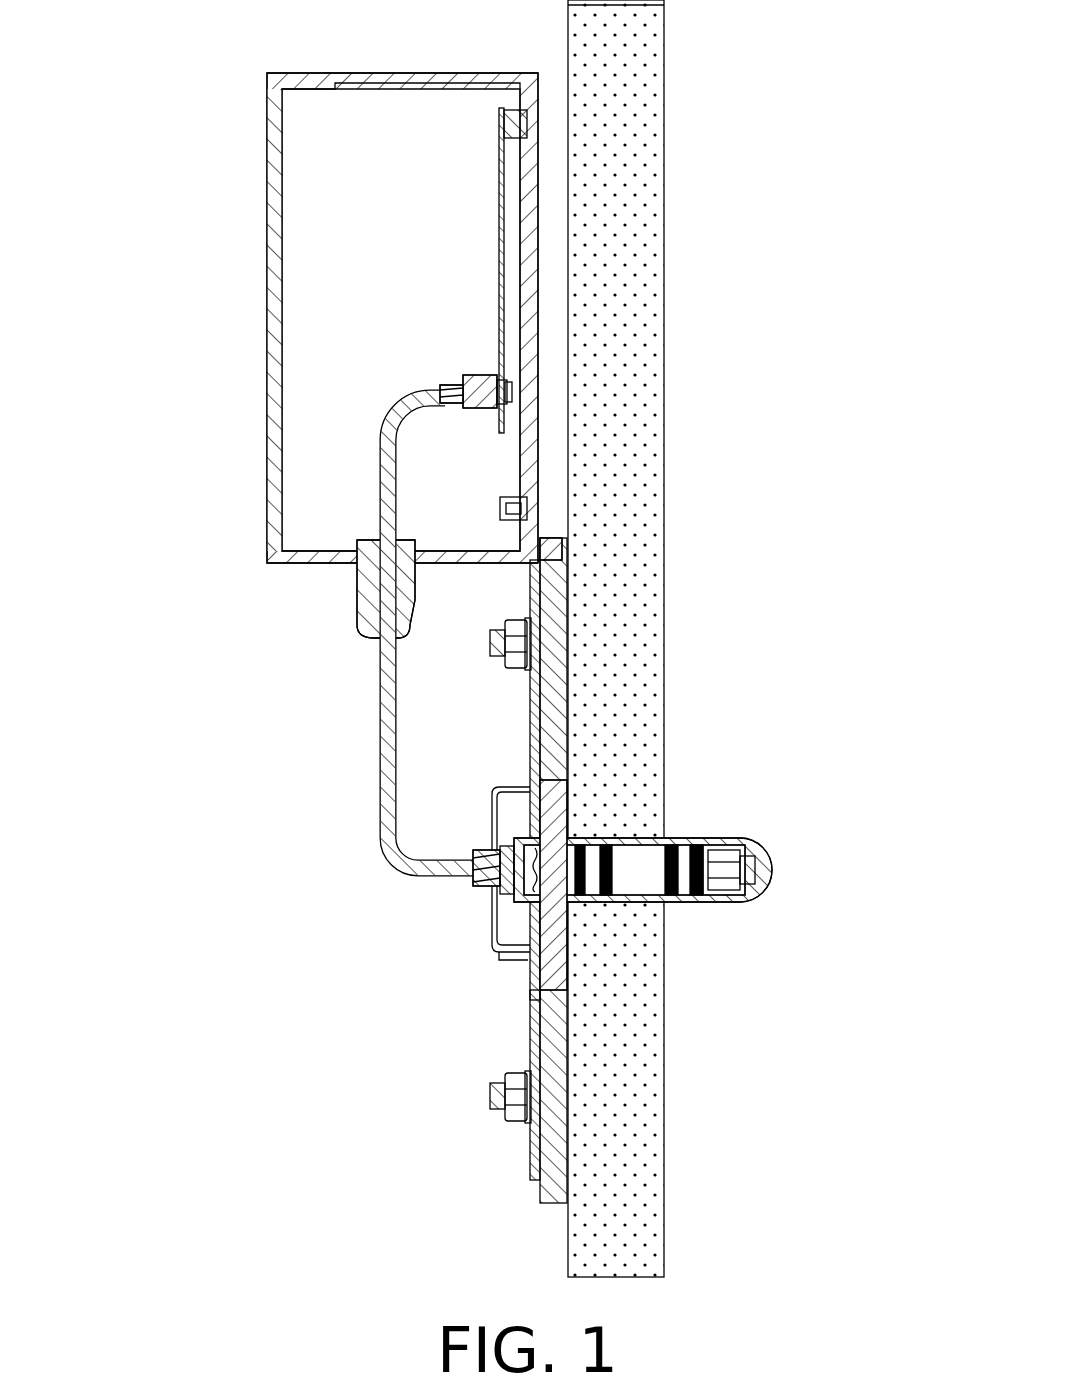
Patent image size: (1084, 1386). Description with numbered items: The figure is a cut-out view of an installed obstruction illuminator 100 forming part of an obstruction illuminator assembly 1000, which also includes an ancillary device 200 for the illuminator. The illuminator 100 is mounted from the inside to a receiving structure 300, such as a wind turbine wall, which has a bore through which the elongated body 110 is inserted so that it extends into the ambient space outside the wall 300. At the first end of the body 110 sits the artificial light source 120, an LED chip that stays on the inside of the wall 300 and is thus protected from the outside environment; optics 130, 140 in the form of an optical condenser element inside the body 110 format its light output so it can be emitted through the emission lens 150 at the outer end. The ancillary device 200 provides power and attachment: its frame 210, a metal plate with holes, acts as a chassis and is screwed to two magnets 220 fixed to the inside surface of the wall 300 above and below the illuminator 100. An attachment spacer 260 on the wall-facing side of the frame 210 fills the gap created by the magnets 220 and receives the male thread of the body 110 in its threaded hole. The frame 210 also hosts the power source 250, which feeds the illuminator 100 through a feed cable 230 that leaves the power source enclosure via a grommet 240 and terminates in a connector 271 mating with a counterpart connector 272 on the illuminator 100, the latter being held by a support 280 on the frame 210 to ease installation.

The obstruction illuminator 100 is at (767, 832).
The elongated body 110 is at (686, 838).
The artificial light source 120 is at (524, 841).
The optics 130 is at (532, 1035).
The optics 140 is at (685, 908).
The emission lens 150 is at (772, 878).
The ancillary device 200 is at (168, 927).
The frame 210 is at (530, 1140).
The magnets 220 is at (533, 678).
The feed cable 230 is at (380, 755).
The grommet 240 is at (357, 626).
The power source 250 is at (299, 582).
The attachment spacer 260 is at (532, 997).
The connector 271 is at (490, 866).
The counterpart connector 272 is at (492, 916).
The support 280 is at (500, 954).
The receiving structure 300 is at (651, 737).
The obstruction illuminator assembly 1000 is at (722, 1101).